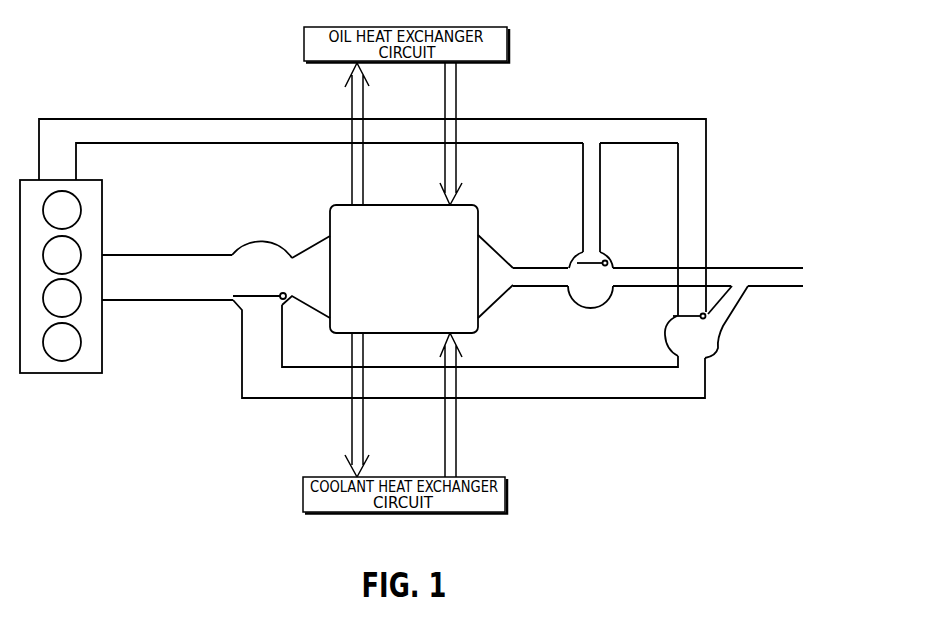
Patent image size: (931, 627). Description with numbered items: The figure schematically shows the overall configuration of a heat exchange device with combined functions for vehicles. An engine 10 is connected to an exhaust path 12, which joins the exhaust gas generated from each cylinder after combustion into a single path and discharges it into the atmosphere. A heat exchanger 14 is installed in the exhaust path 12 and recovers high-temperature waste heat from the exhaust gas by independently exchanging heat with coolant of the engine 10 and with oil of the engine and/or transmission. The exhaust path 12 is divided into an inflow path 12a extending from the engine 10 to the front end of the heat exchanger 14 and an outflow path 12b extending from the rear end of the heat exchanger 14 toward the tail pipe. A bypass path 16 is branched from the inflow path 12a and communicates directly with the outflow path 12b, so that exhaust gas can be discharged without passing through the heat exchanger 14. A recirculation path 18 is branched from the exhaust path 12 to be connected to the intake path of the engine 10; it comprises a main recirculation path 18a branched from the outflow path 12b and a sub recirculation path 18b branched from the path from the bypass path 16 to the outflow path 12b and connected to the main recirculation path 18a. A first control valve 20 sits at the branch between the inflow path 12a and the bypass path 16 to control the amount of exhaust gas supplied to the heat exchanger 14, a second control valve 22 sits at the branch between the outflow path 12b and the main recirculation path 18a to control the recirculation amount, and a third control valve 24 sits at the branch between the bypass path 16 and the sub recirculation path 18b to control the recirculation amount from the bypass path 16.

The engine 10 is at (60, 373).
The exhaust path 12 is at (152, 312).
The inflow path 12a is at (210, 305).
The outflow path 12b is at (778, 282).
The heat exchanger 14 is at (478, 218).
The bypass path 16 is at (532, 398).
The recirculation path 18 is at (157, 113).
The main recirculation path 18a is at (582, 198).
The sub recirculation path 18b is at (707, 145).
The first control valve 20 is at (258, 290).
The second control valve 22 is at (587, 272).
The third control valve 24 is at (685, 316).